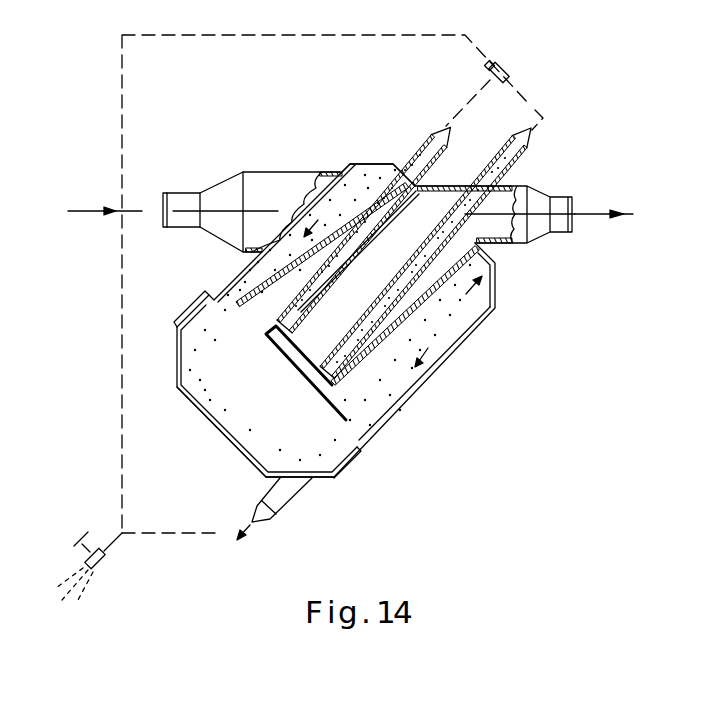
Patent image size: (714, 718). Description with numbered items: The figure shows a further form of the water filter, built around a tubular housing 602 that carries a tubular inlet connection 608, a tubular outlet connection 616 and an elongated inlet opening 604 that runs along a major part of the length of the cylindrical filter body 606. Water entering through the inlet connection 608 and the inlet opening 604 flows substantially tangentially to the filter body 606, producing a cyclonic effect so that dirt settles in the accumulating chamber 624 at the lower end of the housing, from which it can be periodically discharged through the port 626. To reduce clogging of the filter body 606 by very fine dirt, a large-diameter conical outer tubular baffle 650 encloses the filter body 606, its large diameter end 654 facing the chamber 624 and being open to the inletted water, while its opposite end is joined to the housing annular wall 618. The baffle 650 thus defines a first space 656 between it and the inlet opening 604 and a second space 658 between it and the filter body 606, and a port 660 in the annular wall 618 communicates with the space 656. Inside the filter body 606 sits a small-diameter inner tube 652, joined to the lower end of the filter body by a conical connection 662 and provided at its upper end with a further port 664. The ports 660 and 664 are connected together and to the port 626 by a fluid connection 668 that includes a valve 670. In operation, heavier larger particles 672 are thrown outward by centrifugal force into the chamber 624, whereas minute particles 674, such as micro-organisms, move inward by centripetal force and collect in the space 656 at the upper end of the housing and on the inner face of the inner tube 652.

The tubular housing 602 is at (506, 281).
The inlet opening 604 is at (310, 287).
The cylindrical filter body 606 is at (303, 188).
The tubular inlet connection 608 is at (183, 204).
The tubular outlet connection 616 is at (531, 197).
The housing annular wall 618 is at (378, 183).
The accumulating chamber 624 is at (258, 438).
The port 626 is at (283, 502).
The outer tubular baffle 650 is at (407, 382).
The inner tube 652 is at (478, 331).
The large diameter end of baffle 654 is at (235, 300).
The first space 656 is at (412, 191).
The second space 658 is at (358, 216).
The port 660 is at (428, 150).
The conical connection 662 is at (445, 352).
The further port 664 is at (535, 131).
The fluid connection 668 is at (528, 97).
The valve 670 is at (80, 536).
The larger particles 672 is at (196, 338).
The minute particles 674 is at (298, 328).